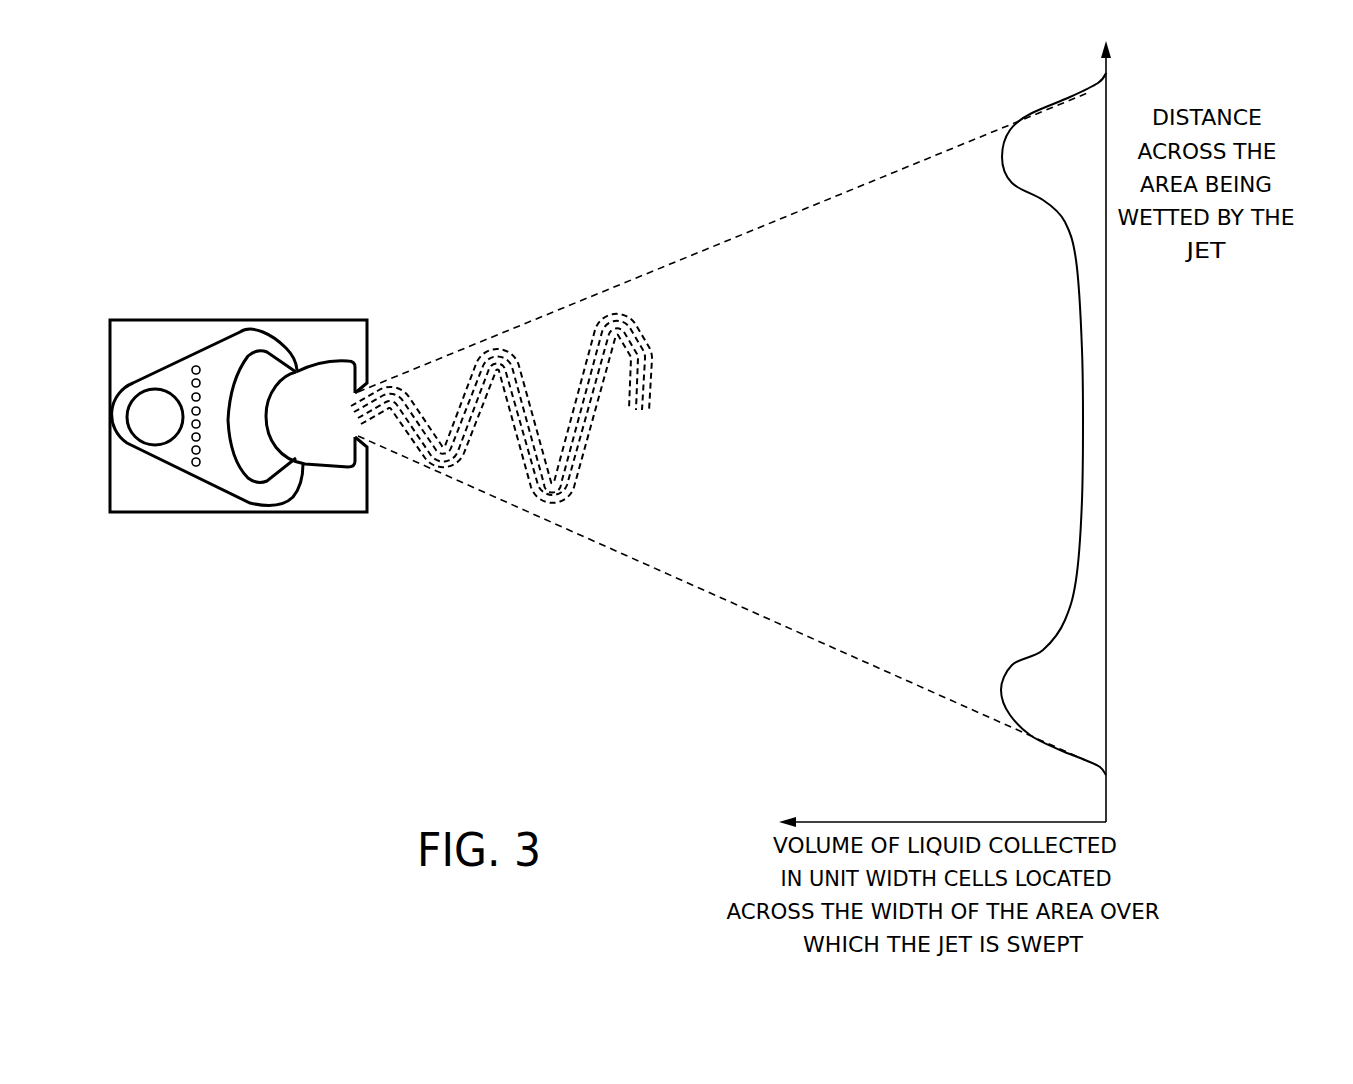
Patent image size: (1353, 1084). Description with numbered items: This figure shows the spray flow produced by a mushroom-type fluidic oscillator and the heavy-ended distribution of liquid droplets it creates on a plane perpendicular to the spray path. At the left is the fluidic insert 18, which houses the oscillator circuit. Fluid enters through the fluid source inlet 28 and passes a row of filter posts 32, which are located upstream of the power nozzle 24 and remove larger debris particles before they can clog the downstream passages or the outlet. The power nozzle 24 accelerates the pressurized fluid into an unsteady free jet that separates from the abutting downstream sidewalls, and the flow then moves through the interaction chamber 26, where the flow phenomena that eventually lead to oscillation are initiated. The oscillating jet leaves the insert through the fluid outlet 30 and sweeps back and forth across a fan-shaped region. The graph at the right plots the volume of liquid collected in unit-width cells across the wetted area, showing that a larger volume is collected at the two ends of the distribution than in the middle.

The fluidic insert 18 is at (208, 512).
The power nozzle 24 is at (300, 373).
The interaction chamber 26 is at (308, 427).
The fluid source inlet 28 is at (152, 410).
The fluid outlet 30 is at (395, 520).
The filter posts 32 is at (202, 372).